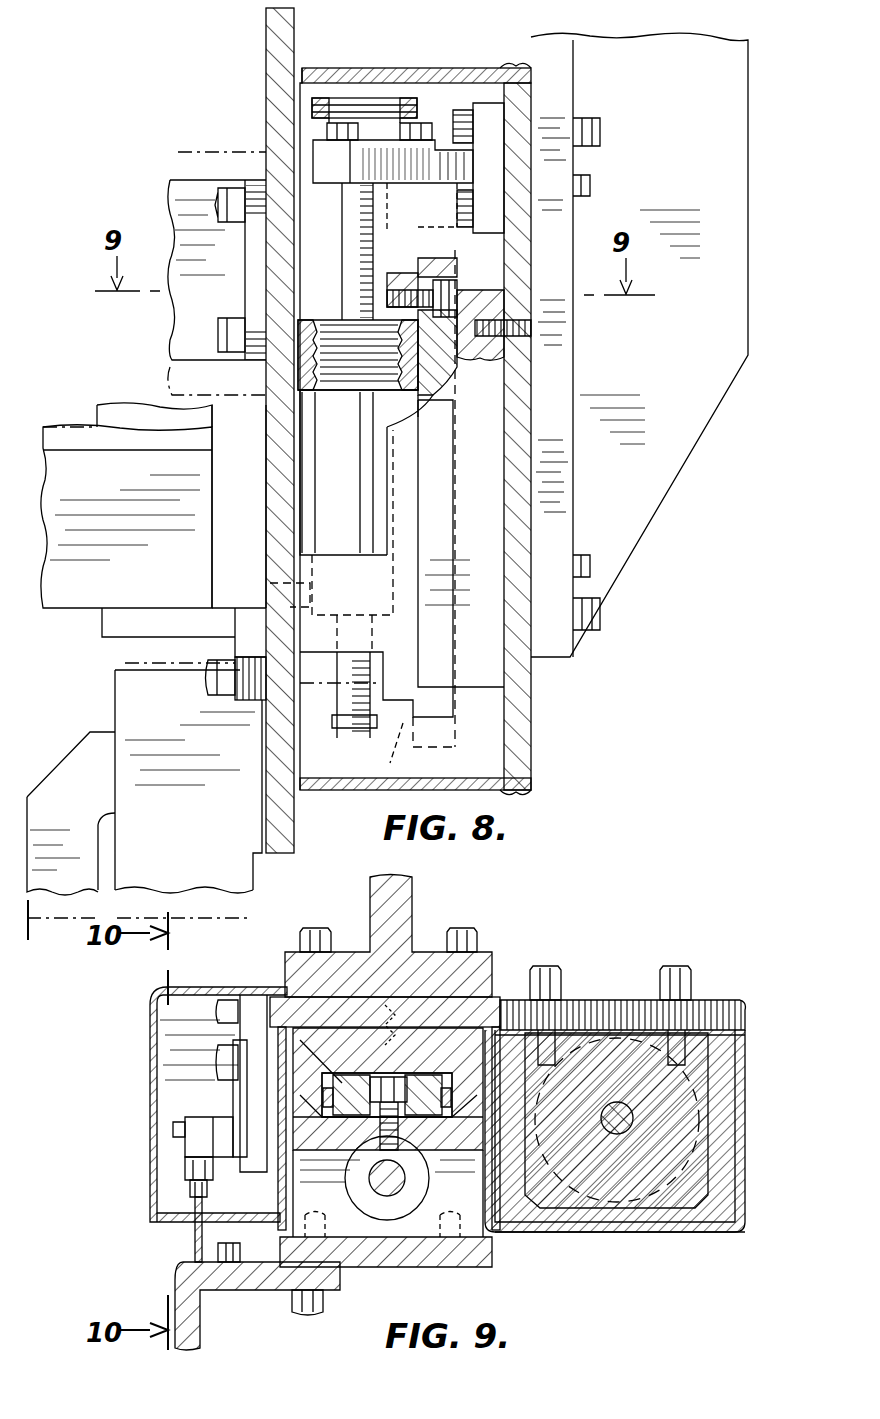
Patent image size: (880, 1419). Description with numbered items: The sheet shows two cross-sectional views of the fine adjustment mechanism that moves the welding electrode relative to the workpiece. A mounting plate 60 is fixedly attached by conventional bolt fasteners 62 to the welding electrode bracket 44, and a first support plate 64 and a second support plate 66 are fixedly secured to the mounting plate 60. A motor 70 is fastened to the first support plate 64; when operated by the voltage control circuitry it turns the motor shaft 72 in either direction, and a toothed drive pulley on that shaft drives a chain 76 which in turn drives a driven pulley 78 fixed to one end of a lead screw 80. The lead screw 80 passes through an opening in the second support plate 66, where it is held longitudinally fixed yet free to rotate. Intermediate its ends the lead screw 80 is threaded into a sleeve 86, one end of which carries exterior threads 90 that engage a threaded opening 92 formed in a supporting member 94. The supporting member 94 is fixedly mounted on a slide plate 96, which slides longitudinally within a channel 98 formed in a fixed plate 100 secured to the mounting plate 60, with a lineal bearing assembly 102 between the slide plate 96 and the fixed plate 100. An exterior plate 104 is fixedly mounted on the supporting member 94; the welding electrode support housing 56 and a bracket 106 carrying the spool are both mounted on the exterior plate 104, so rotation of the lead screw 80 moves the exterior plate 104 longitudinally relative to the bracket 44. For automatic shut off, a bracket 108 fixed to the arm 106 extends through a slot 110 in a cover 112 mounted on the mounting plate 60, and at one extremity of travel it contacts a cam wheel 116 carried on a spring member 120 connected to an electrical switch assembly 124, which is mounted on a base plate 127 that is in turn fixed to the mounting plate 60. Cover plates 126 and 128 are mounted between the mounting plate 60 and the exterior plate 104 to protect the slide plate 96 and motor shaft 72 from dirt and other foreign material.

In FIG. 8, the welding electrode bracket 44 is at (715, 385).
In FIG. 9, the welding electrode bracket 44 is at (398, 900).
In FIG. 8, the welding electrode support housing 56 is at (125, 700).
In FIG. 8, the mounting plate 60 is at (517, 733).
In FIG. 9, the mounting plate 60 is at (605, 1000).
In FIG. 8, the bolt fastener 62 is at (602, 133).
In FIG. 9, the bolt fastener 62 is at (352, 890).
In FIG. 9, the first support plate 64 is at (740, 1192).
In FIG. 8, the second support plate 66 is at (537, 110).
In FIG. 9, the motor 70 is at (632, 1238).
In FIG. 9, the motor shaft 72 is at (635, 1118).
In FIG. 8, the chain 76 is at (415, 123).
In FIG. 8, the driven pulley 78 is at (362, 98).
In FIG. 8, the lead screw 80 is at (350, 205).
In FIG. 9, the lead screw 80 is at (382, 1195).
In FIG. 8, the sleeve 86 is at (372, 520).
In FIG. 9, the sleeve 86 is at (405, 1205).
In FIG. 8, the exterior threads 90 is at (440, 385).
In FIG. 8, the threaded opening 92 is at (470, 342).
In FIG. 8, the supporting member 94 is at (400, 335).
In FIG. 9, the supporting member 94 is at (480, 1235).
In FIG. 8, the slide plate 96 is at (540, 300).
In FIG. 9, the slide plate 96 is at (495, 960).
In FIG. 9, the channel 98 is at (247, 1030).
In FIG. 8, the fixed plate 100 is at (487, 668).
In FIG. 9, the fixed plate 100 is at (342, 1083).
In FIG. 9, the lineal bearing assembly 102 is at (285, 1095).
In FIG. 8, the exterior plate 104 is at (278, 90).
In FIG. 9, the exterior plate 104 is at (480, 1265).
In FIG. 8, the bracket 106 is at (185, 195).
In FIG. 9, the bracket 106 is at (200, 1335).
In FIG. 9, the bracket 108 is at (195, 1247).
In FIG. 9, the slot 110 is at (190, 1228).
In FIG. 9, the cover 112 is at (160, 1013).
In FIG. 9, the cam wheel 116 is at (190, 1190).
In FIG. 9, the spring member 120 is at (212, 1168).
In FIG. 9, the electrical switch assembly 124 is at (118, 1120).
In FIG. 9, the cover plate 126 is at (278, 1235).
In FIG. 9, the base plate 127 is at (247, 1052).
In FIG. 9, the cover plate 128 is at (712, 1234).